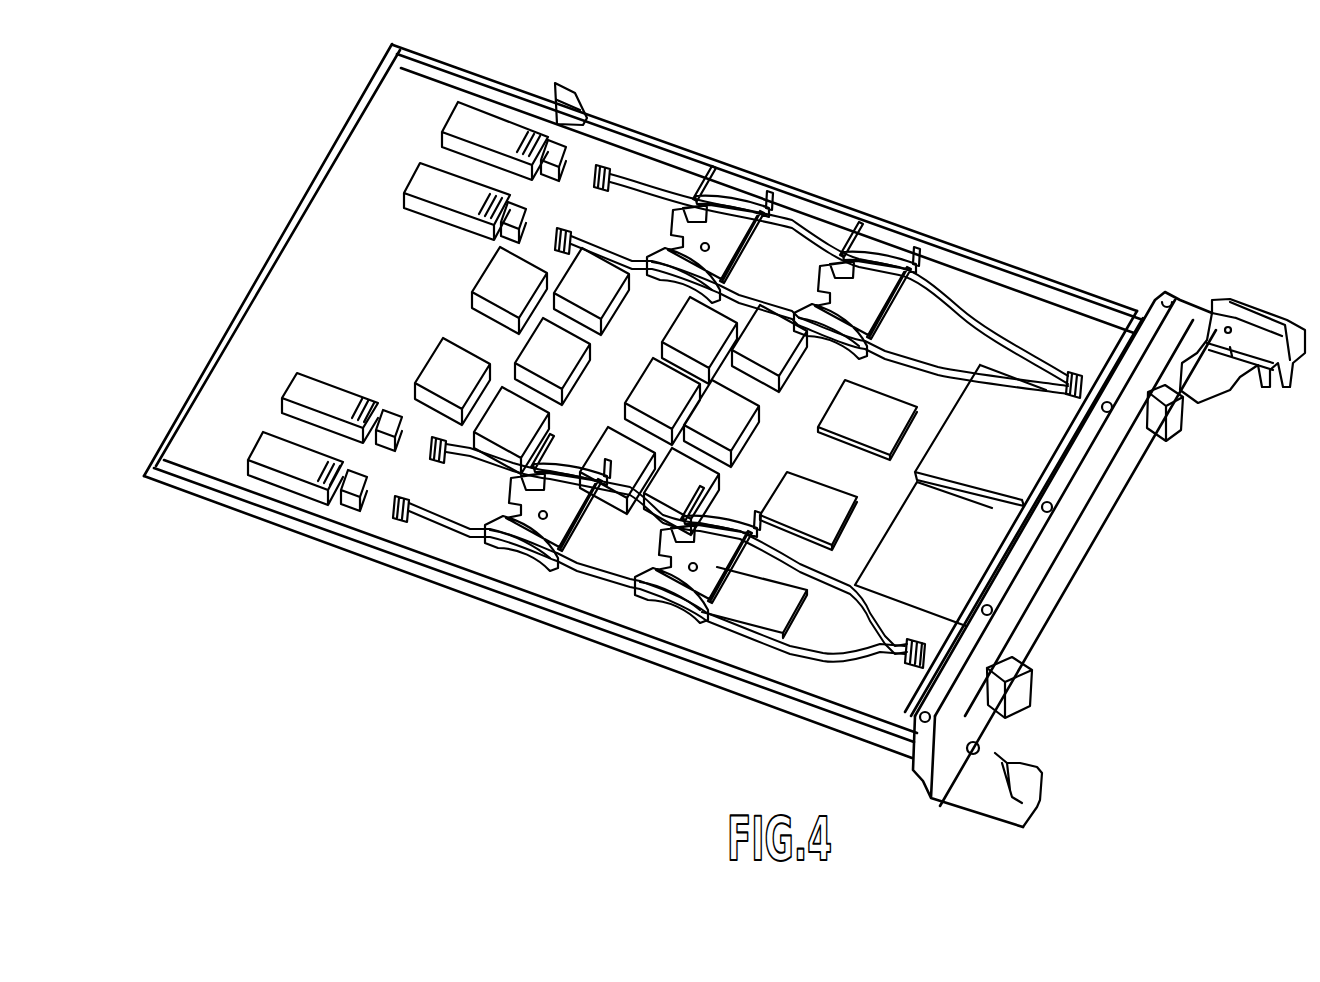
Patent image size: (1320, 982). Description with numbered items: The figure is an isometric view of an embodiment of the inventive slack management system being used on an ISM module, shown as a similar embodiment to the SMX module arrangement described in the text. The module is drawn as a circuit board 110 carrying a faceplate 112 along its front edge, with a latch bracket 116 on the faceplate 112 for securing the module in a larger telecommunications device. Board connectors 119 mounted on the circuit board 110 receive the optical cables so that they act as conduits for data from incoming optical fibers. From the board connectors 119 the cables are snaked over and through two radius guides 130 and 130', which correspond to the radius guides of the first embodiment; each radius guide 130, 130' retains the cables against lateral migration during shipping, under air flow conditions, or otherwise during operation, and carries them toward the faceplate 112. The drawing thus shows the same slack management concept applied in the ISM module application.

The circuit board 110 is at (643, 401).
The front panel 112 is at (1037, 622).
The latch bracket 116 is at (1022, 692).
The optical transceiver module 119 is at (292, 463).
The cable clip 130 is at (689, 610).
The cable clip 130' is at (530, 545).